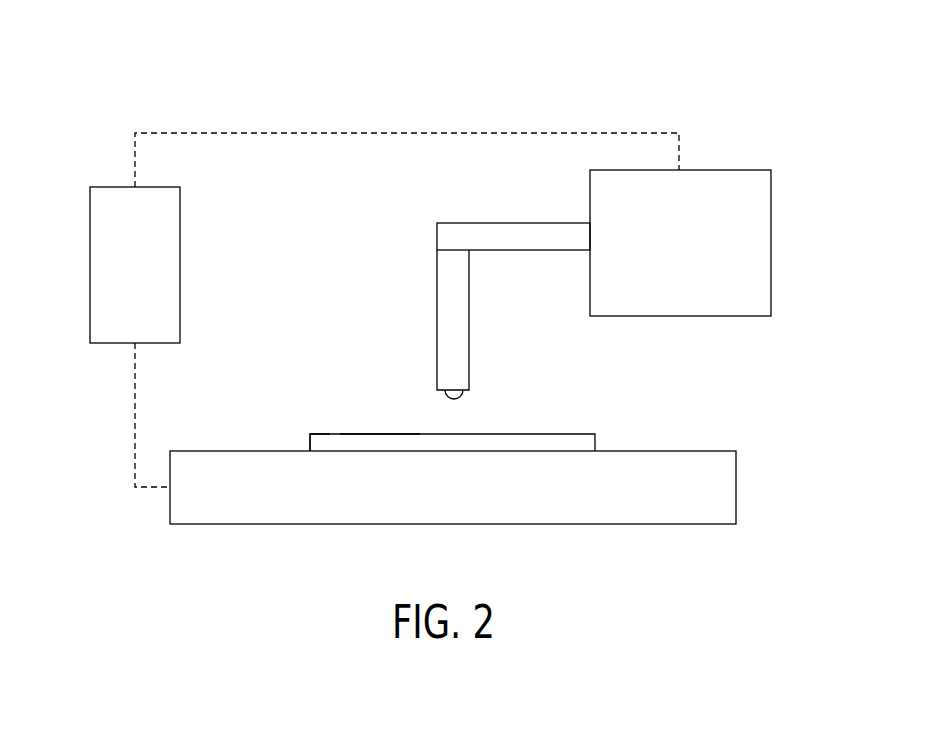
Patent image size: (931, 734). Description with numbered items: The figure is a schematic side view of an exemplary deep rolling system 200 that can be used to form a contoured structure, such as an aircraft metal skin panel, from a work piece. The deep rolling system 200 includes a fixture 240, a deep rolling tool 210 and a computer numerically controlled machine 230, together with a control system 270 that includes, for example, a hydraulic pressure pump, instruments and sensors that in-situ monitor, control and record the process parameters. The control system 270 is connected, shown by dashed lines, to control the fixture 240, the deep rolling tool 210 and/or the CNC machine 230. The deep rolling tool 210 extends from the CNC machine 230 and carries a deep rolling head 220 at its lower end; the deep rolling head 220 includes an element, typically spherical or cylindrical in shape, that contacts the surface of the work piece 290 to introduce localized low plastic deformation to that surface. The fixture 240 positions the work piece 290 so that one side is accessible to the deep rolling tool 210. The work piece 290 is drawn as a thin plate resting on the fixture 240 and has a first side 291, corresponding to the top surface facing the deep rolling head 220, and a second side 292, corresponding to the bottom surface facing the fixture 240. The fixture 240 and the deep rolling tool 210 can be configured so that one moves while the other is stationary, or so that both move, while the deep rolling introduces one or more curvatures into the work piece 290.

The deep rolling system 200 is at (158, 74).
The deep rolling tool 210 is at (515, 222).
The deep rolling head 220 is at (462, 398).
The computer numerically controlled (CNC) machine 230 is at (772, 243).
The fixture 240 is at (700, 497).
The control system 270 is at (90, 266).
The work piece 290 is at (583, 442).
The first side 291 is at (378, 434).
The second side 292 is at (310, 448).